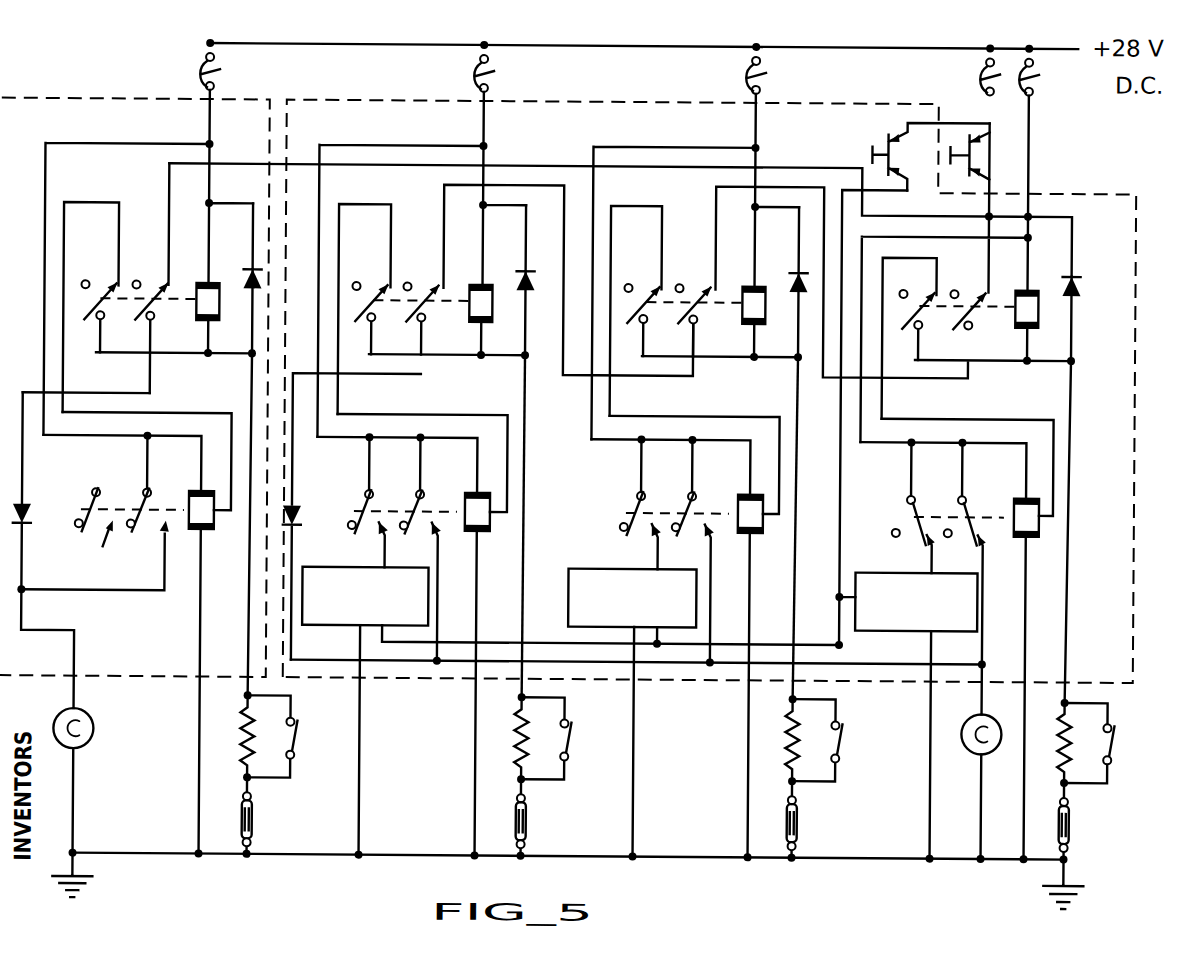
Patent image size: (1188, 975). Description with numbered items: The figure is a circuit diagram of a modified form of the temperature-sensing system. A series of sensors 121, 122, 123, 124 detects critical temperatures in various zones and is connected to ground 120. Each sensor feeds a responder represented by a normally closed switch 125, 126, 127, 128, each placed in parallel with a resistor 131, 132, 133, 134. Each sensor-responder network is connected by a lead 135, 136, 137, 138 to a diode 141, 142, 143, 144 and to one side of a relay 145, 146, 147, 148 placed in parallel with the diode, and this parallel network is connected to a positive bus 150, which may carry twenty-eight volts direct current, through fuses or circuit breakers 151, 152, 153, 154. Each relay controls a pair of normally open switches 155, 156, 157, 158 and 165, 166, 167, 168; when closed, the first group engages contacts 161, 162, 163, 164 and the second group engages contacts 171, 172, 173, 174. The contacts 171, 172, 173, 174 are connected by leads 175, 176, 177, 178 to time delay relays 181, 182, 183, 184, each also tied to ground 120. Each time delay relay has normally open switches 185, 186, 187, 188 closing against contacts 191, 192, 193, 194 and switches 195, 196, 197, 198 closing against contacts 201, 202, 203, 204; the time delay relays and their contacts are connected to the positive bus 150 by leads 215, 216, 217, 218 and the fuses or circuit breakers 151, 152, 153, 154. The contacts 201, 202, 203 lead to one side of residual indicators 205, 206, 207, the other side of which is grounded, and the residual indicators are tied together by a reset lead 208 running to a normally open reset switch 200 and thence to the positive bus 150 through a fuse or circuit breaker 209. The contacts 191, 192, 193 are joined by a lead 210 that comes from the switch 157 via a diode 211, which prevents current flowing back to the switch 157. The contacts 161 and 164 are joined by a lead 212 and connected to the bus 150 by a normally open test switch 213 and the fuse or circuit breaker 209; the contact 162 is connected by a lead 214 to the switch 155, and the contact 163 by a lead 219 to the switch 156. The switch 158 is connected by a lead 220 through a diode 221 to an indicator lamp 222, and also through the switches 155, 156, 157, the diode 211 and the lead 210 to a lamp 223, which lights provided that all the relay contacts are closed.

The ground 120 is at (850, 862).
The sensor 121 is at (1073, 823).
The sensor 122 is at (800, 820).
The sensor 123 is at (527, 814).
The sensor 124 is at (255, 818).
The normally closed switch 125 is at (1114, 740).
The normally closed switch 126 is at (846, 737).
The normally closed switch 127 is at (572, 740).
The normally closed switch 128 is at (299, 742).
The resistor 131 is at (1061, 745).
The resistor 132 is at (789, 748).
The resistor 133 is at (516, 735).
The resistor 134 is at (245, 730).
The lead 135 is at (1072, 590).
The lead 136 is at (797, 592).
The lead 137 is at (524, 586).
The lead 138 is at (249, 601).
The diode 141 is at (1091, 291).
The diode 142 is at (784, 284).
The diode 143 is at (511, 282).
The diode 144 is at (258, 286).
The relay 145 is at (1039, 328).
The relay 146 is at (766, 324).
The relay 147 is at (493, 322).
The relay 148 is at (213, 320).
The positive bus 150 is at (935, 52).
The fuse or circuit breaker 151 is at (1050, 80).
The fuse or circuit breaker 152 is at (767, 72).
The fuse or circuit breaker 153 is at (503, 72).
The fuse or circuit breaker 154 is at (220, 72).
The switch 155 is at (984, 339).
The switch 156 is at (709, 334).
The switch 157 is at (439, 333).
The switch 158 is at (153, 320).
The contact 161 is at (965, 292).
The contact 162 is at (691, 282).
The contact 163 is at (420, 278).
The contact 164 is at (167, 281).
The switch 165 is at (933, 339).
The switch 166 is at (660, 334).
The switch 167 is at (387, 332).
The switch 168 is at (103, 320).
The contact 171 is at (913, 292).
The contact 172 is at (640, 282).
The contact 173 is at (369, 278).
The contact 174 is at (117, 281).
The lead 175 is at (952, 413).
The lead 176 is at (760, 414).
The lead 177 is at (418, 412).
The lead 178 is at (162, 412).
The time delay relay 181 is at (1013, 494).
The time delay relay 182 is at (741, 495).
The time delay relay 183 is at (470, 492).
The time delay relay 184 is at (192, 490).
The switch 185 is at (961, 499).
The switch 186 is at (674, 500).
The switch 187 is at (401, 497).
The switch 188 is at (143, 496).
The contact 191 is at (983, 597).
The contact 192 is at (689, 593).
The contact 193 is at (418, 591).
The contact 194 is at (94, 555).
The switch 195 is at (909, 498).
The switch 196 is at (610, 503).
The switch 197 is at (342, 501).
The switch 198 is at (84, 514).
The reset switch 200 is at (893, 140).
The contact 201 is at (932, 551).
The contact 202 is at (636, 546).
The contact 203 is at (366, 544).
The contact 204 is at (88, 544).
The residual indicator 205 is at (905, 568).
The residual indicator 206 is at (592, 566).
The residual indicator 207 is at (323, 566).
The reset lead 208 is at (540, 640).
The fuse or circuit breaker 209 is at (980, 83).
The lead 210 is at (848, 660).
The diode 211 is at (288, 516).
The lead 212 is at (787, 163).
The test switch 213 is at (977, 152).
The lead 214 is at (893, 377).
The lead 215 is at (895, 437).
The lead 216 is at (595, 438).
The lead 217 is at (347, 439).
The lead 218 is at (101, 437).
The lead 219 is at (632, 377).
The lead 220 is at (99, 381).
The diode 221 is at (26, 503).
The indicator lamp 222 is at (96, 724).
The lamp 223 is at (966, 722).